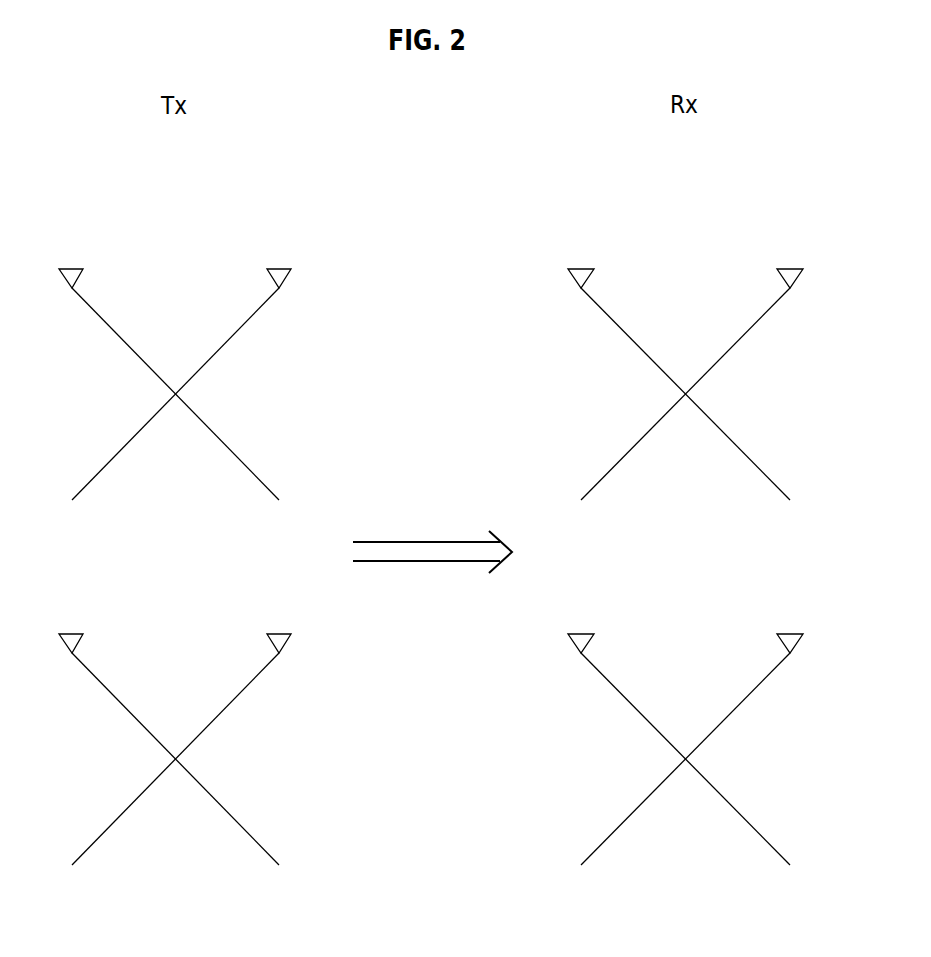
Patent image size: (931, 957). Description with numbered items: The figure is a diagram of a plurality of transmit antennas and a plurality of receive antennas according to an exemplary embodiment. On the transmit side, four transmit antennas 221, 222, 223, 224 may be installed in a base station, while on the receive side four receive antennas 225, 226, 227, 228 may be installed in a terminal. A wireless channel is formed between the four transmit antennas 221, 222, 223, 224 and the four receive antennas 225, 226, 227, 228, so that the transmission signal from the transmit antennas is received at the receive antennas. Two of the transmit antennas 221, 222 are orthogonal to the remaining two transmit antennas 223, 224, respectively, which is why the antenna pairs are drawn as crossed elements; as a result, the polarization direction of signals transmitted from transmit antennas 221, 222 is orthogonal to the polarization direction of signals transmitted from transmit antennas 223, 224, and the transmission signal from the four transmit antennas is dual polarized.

The transmit antenna 221 is at (70, 268).
The transmit antenna 222 is at (70, 633).
The transmit antenna 223 is at (278, 268).
The transmit antenna 224 is at (278, 633).
The receive antenna 225 is at (579, 268).
The receive antenna 226 is at (579, 633).
The receive antenna 227 is at (788, 268).
The receive antenna 228 is at (788, 633).